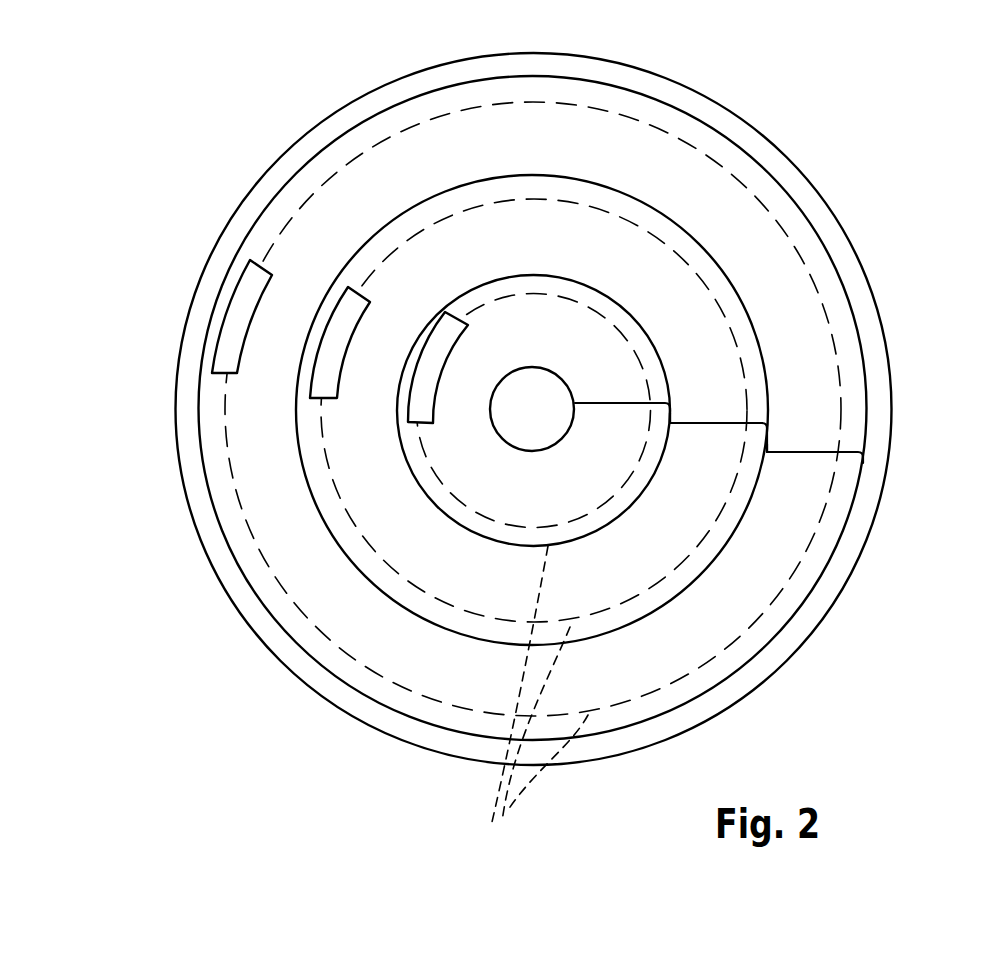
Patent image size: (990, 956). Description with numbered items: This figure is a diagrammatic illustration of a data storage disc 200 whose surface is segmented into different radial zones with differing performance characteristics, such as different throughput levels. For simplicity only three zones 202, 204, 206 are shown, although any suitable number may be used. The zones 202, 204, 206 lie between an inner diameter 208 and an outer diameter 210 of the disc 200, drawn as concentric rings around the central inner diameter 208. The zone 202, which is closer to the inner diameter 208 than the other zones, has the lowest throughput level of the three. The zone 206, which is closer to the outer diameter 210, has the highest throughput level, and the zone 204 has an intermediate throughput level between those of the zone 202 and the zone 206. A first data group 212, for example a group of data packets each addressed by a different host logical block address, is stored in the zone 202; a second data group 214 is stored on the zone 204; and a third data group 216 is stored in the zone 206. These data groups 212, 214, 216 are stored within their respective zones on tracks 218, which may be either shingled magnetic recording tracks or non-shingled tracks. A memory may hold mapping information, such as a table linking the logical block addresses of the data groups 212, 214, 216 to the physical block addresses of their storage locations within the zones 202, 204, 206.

The data storage disc 200 is at (812, 153).
The zone 202 is at (623, 403).
The zone 204 is at (718, 423).
The zone 206 is at (813, 452).
The inner diameter 208 is at (491, 407).
The outer diameter 210 is at (222, 591).
The first data group 212 is at (408, 410).
The second data group 214 is at (320, 385).
The third data group 216 is at (228, 338).
The tracks 218 is at (535, 700).